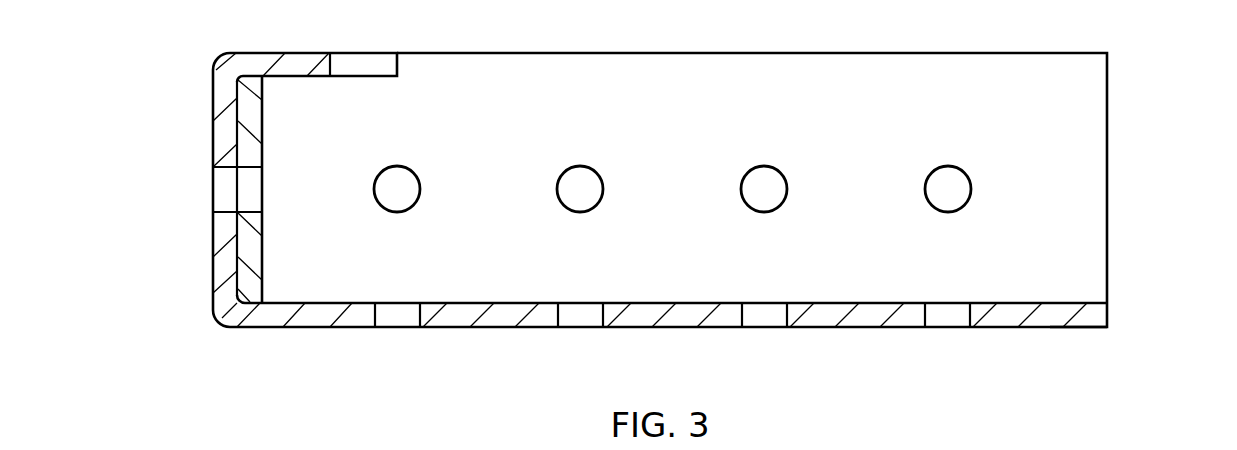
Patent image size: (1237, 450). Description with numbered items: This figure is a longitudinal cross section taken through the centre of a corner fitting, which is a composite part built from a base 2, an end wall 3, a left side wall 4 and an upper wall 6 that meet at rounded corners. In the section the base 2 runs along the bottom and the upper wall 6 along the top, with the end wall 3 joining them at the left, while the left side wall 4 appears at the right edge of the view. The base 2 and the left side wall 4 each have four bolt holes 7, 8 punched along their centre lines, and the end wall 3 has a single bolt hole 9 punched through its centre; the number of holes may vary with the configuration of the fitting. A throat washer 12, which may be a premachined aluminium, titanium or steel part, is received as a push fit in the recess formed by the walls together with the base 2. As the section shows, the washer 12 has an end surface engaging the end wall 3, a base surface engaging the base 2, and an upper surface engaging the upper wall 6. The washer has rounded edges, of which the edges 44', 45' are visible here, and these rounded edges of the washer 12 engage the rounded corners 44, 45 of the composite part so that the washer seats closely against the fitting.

The base 2 is at (668, 328).
The end wall 3 is at (227, 227).
The left side wall 4 is at (1107, 186).
The upper wall 6 is at (307, 53).
The bolt holes 7 is at (398, 303).
The bolt holes 8 is at (400, 166).
The bolt hole 9 is at (227, 198).
The throat washer 12 is at (262, 233).
The corner 44 is at (269, 270).
The rounded edge 44' is at (186, 323).
The corner 45 is at (285, 107).
The rounded edge 45' is at (186, 50).